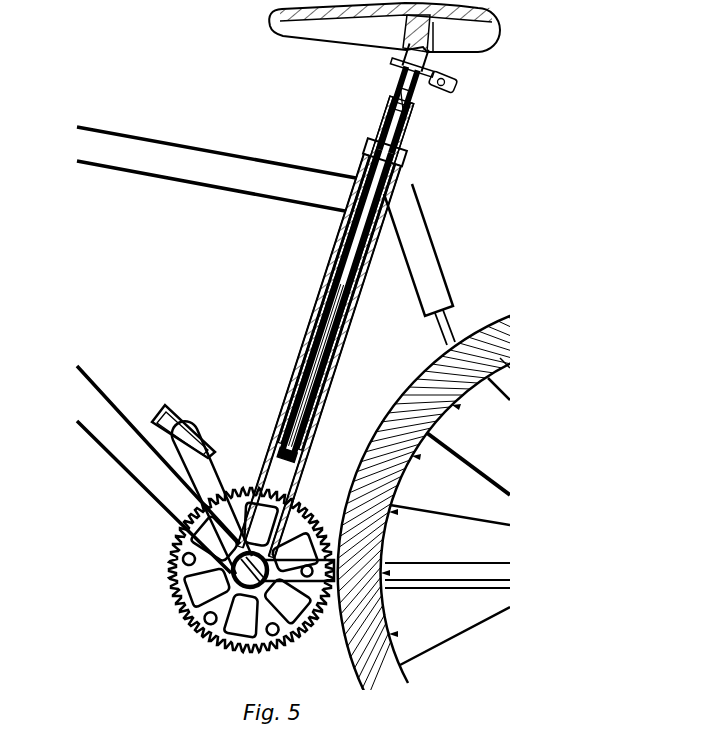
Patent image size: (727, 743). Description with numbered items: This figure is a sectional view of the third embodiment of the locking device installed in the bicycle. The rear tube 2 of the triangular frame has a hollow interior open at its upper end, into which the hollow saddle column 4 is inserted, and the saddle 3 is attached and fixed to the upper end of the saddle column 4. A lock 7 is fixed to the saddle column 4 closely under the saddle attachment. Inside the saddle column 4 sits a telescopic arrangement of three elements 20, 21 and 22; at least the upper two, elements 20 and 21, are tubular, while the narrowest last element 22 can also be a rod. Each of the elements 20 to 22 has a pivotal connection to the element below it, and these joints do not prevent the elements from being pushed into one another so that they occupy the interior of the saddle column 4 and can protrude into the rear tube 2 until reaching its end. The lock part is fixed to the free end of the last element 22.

The rear tube 2 is at (392, 186).
The saddle 3 is at (272, 30).
The saddle column 4 is at (387, 108).
The lock 7 is at (465, 88).
The first telescopic element 20 is at (383, 127).
The second telescopic element 21 is at (300, 385).
The third telescopic element 22 is at (293, 450).